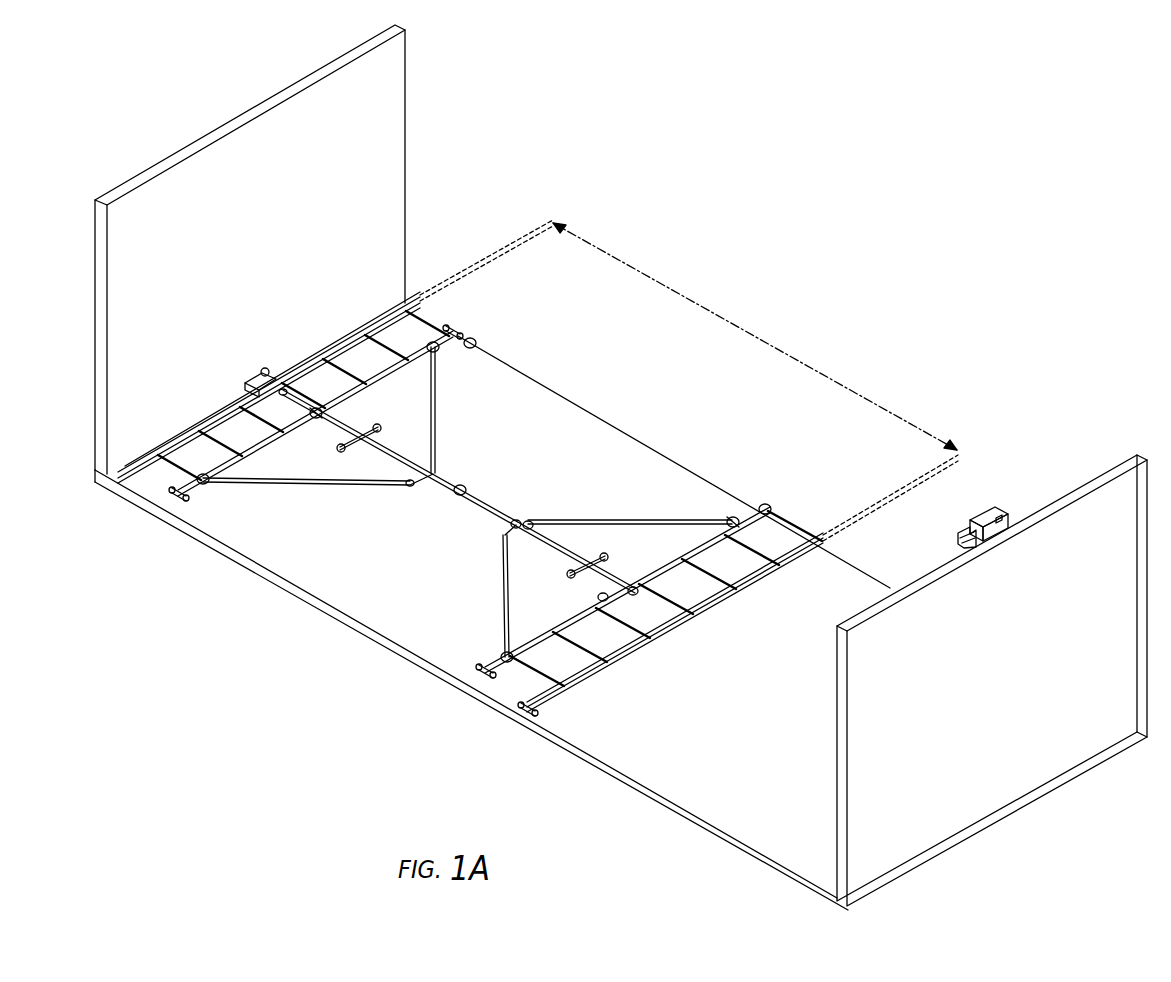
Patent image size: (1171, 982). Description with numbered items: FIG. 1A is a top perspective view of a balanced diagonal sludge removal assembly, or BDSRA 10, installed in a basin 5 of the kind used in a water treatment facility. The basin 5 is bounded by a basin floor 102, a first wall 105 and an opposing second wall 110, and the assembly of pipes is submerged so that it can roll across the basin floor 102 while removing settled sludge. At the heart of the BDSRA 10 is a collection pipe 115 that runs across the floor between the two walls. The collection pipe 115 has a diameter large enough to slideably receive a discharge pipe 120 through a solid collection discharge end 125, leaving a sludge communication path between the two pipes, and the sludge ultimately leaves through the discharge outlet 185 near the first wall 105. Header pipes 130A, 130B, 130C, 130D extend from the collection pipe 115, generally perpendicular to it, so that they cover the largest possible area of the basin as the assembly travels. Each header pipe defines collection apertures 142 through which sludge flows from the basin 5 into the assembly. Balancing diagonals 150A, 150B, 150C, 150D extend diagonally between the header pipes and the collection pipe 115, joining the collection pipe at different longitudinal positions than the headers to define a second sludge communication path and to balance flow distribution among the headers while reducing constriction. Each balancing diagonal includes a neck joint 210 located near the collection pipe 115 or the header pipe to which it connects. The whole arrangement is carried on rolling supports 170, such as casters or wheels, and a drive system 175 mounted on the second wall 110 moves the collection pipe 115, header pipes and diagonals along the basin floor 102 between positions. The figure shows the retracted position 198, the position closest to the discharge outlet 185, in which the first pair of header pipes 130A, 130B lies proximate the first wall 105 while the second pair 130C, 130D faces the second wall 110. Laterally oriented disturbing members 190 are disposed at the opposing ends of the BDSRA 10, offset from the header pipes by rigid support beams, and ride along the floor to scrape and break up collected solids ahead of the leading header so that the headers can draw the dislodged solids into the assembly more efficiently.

The basin 5 is at (446, 114).
The balanced diagonal sludge removal assembly (BDSRA) 10 is at (697, 174).
The basin floor 102 is at (645, 780).
The first wall 105 is at (213, 200).
The second wall 110 is at (1000, 713).
The collection pipe 115 is at (613, 570).
The discharge pipe 120 is at (223, 402).
The collection discharge end 125 is at (315, 400).
The header pipe 130A is at (178, 496).
The header pipe 130B is at (453, 325).
The header pipe 130C is at (485, 670).
The header pipe 130D is at (735, 520).
The collection aperture 142 is at (512, 695).
The balancing diagonal 150A is at (277, 485).
The balancing diagonal 150B is at (440, 390).
The balancing diagonal 150C is at (500, 595).
The balancing diagonal 150D is at (590, 517).
The rolling support 170 is at (470, 345).
The drive system 175 is at (982, 508).
The discharge outlet 185 is at (262, 372).
The disturbing member 190 is at (420, 298).
The retracted position 198 is at (700, 305).
The neck joint 210 is at (440, 352).